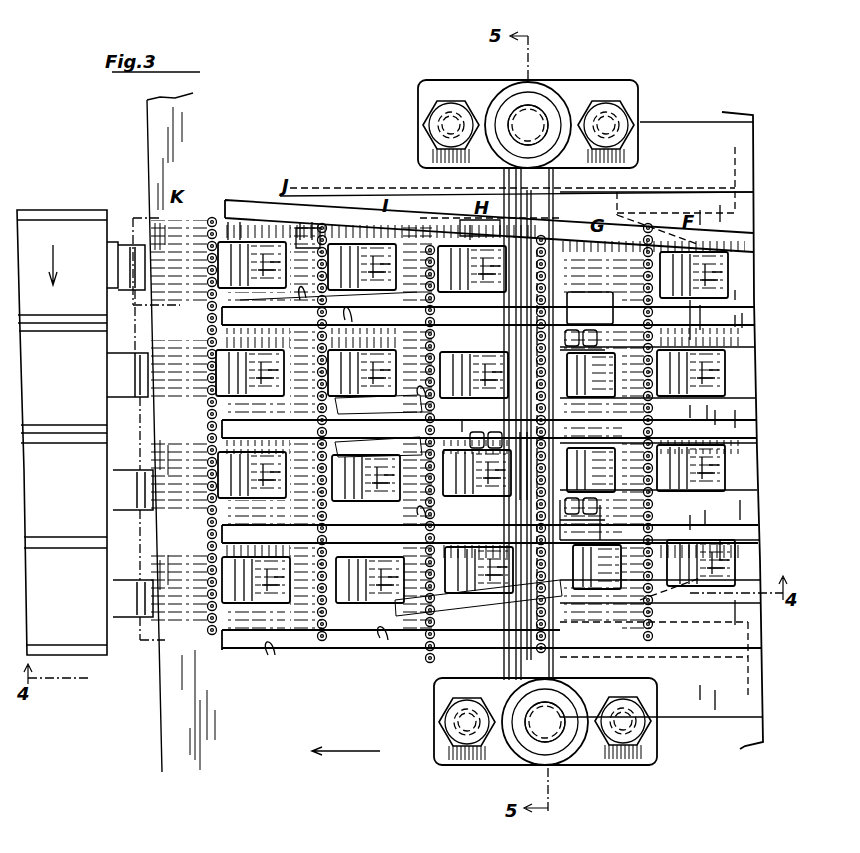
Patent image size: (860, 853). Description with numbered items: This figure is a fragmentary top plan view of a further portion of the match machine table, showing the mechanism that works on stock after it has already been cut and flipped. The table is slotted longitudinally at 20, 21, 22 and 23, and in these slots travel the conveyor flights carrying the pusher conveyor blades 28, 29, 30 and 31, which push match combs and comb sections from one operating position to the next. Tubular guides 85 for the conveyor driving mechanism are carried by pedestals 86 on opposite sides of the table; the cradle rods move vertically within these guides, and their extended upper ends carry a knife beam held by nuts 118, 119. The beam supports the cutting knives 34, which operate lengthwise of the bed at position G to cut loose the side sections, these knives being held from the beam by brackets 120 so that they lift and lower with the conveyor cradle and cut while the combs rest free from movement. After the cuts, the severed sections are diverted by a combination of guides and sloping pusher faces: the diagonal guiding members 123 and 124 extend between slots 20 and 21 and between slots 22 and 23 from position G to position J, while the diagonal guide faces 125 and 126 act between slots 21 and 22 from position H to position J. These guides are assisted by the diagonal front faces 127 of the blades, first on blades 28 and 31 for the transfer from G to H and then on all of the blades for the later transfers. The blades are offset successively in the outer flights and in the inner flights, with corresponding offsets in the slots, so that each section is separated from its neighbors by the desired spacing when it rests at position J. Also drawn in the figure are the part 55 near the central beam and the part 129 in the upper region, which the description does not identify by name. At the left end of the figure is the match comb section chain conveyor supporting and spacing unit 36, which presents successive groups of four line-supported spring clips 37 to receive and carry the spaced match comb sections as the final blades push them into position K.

The slot 20 is at (745, 292).
The slot 21 is at (745, 386).
The slot 22 is at (745, 479).
The slot 23 is at (745, 548).
The pusher conveyor blade 28 is at (228, 222).
The pusher conveyor blade 29 is at (214, 346).
The pusher conveyor blade 30 is at (214, 458).
The pusher conveyor blade 31 is at (214, 568).
The cutting knife 34 is at (625, 514).
The match comb section conveyor supporting and spacing unit 36 is at (62, 417).
The spring clip 37 is at (140, 252).
The pin 55 is at (503, 449).
The tubular guide 85 is at (572, 98).
The pedestal 86 is at (622, 80).
The nut 118 is at (526, 92).
The nut 119 is at (540, 750).
The bracket 120 is at (560, 412).
The diagonal guiding member 123 is at (470, 210).
The diagonal guiding member 124 is at (422, 645).
The diagonal guide face 125 is at (410, 404).
The diagonal guide face 126 is at (410, 448).
The diagonal front face 127 is at (414, 242).
The pin 129 is at (318, 215).